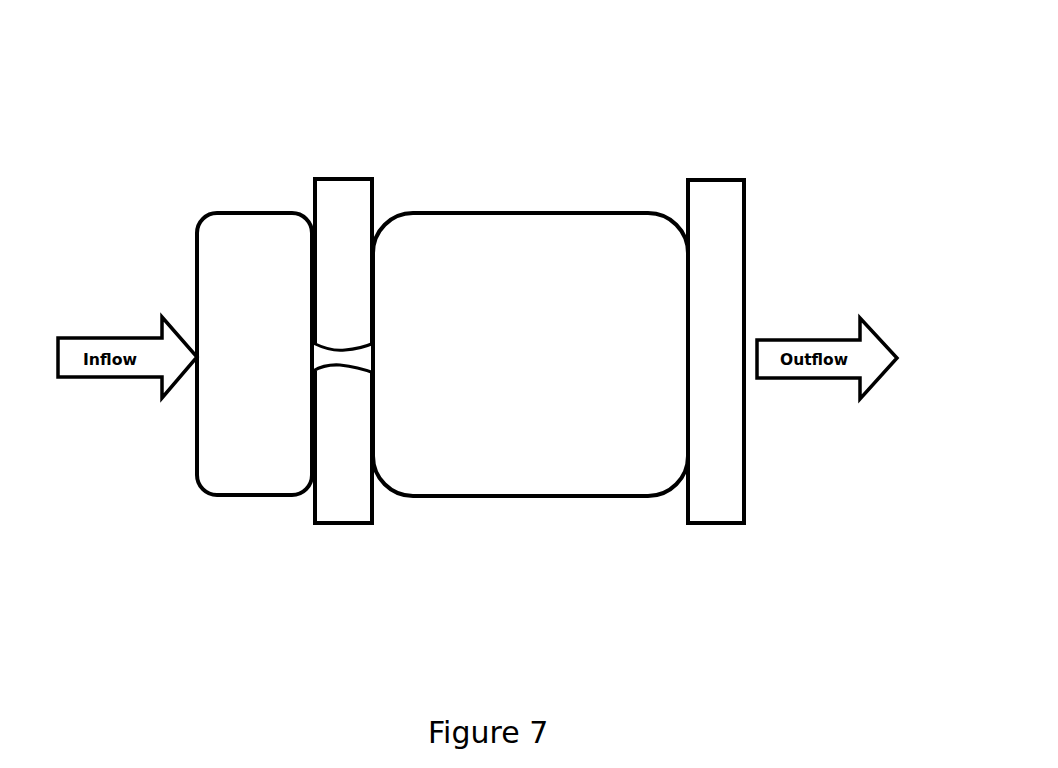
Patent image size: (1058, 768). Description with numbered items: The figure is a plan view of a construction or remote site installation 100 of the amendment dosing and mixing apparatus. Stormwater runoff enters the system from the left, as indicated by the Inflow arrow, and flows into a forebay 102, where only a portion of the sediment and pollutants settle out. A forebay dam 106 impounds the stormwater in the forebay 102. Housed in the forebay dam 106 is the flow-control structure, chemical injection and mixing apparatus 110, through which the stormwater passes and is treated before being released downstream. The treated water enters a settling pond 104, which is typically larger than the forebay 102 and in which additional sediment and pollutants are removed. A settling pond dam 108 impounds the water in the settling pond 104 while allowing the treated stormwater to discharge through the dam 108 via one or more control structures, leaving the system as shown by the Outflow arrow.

The flow system 100 is at (652, 80).
The forebay 102 is at (240, 255).
The settling pond 104 is at (535, 415).
The forebay dam 106 is at (347, 533).
The settling pond dam 108 is at (723, 533).
The flow-control structure, chemical injection and mixing apparatus 110 is at (348, 357).